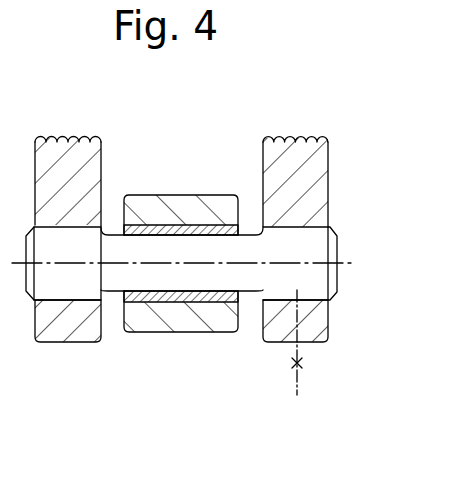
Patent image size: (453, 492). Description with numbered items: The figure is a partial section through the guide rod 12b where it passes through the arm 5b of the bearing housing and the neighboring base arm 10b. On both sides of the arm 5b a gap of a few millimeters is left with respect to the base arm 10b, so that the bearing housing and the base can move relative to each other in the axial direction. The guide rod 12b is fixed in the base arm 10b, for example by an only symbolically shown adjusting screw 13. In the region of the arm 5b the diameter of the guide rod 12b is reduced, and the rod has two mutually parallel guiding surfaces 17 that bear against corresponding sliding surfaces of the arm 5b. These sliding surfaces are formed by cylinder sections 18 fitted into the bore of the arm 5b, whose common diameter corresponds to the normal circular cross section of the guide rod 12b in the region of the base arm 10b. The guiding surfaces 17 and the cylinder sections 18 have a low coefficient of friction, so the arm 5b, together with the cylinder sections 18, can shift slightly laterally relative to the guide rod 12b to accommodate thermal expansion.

The base arm 10b is at (272, 156).
The guide rod 12b is at (322, 243).
The arm of the bearing housing 5b is at (134, 319).
The guiding surfaces 17 is at (148, 228).
The cylinder sections 18 is at (208, 234).
The adjusting screw 13 is at (297, 392).